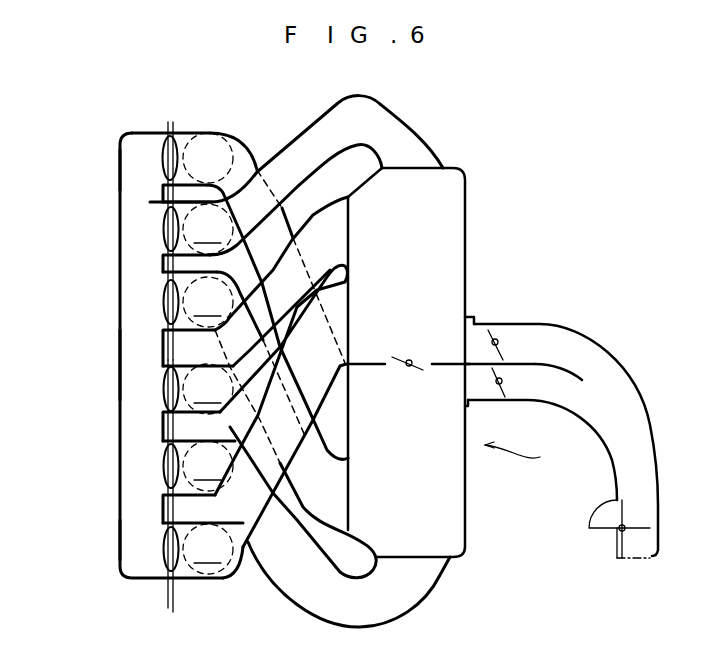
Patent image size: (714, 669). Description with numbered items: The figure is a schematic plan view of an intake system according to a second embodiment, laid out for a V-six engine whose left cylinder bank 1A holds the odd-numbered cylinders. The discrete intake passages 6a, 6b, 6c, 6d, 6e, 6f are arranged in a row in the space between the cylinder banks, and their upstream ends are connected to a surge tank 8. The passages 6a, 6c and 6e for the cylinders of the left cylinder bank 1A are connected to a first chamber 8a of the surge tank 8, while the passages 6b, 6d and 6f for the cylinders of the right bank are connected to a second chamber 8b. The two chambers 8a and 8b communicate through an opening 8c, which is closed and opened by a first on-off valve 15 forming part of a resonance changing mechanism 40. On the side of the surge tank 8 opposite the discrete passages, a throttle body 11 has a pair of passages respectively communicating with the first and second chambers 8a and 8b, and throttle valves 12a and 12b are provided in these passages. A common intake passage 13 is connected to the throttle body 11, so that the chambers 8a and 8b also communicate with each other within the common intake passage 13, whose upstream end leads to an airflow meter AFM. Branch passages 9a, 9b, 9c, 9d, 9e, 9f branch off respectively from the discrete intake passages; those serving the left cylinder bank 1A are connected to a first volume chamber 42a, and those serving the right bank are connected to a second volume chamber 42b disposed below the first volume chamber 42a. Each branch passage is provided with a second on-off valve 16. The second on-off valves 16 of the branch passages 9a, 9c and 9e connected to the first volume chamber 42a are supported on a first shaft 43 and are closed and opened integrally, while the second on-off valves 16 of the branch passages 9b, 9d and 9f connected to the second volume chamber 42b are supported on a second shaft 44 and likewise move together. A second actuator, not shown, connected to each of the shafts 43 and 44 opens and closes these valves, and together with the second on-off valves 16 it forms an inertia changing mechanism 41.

The left cylinder bank 1A is at (49, 370).
The discrete intake passage 6a is at (340, 313).
The discrete intake passage 6b is at (395, 577).
The discrete intake passage 6c is at (337, 240).
The discrete intake passage 6d is at (337, 485).
The discrete intake passage 6e is at (407, 160).
The discrete intake passage 6f is at (343, 417).
The surge tank 8 is at (477, 228).
The first chamber 8a is at (452, 286).
The second chamber 8b is at (457, 503).
The opening 8c is at (445, 362).
The branch passage 9a is at (200, 582).
The branch passage 9b is at (163, 454).
The branch passage 9c is at (163, 402).
The branch passage 9d is at (163, 316).
The branch passage 9e is at (163, 210).
The branch passage 9f is at (181, 131).
The throttle body 11 is at (505, 395).
The throttle valve 12a is at (530, 328).
The throttle valve 12b is at (520, 398).
The common intake passage 13 is at (622, 367).
The first on-off valve 15 is at (400, 367).
The second on-off valve 16 is at (163, 146).
The resonance changing mechanism 40 is at (528, 453).
The inertia changing mechanism 41 is at (112, 283).
The first volume chamber 42a is at (120, 538).
The second volume chamber 42b is at (120, 170).
The first shaft 43 is at (176, 605).
The second shaft 44 is at (168, 126).
The airflow meter AFM is at (592, 533).